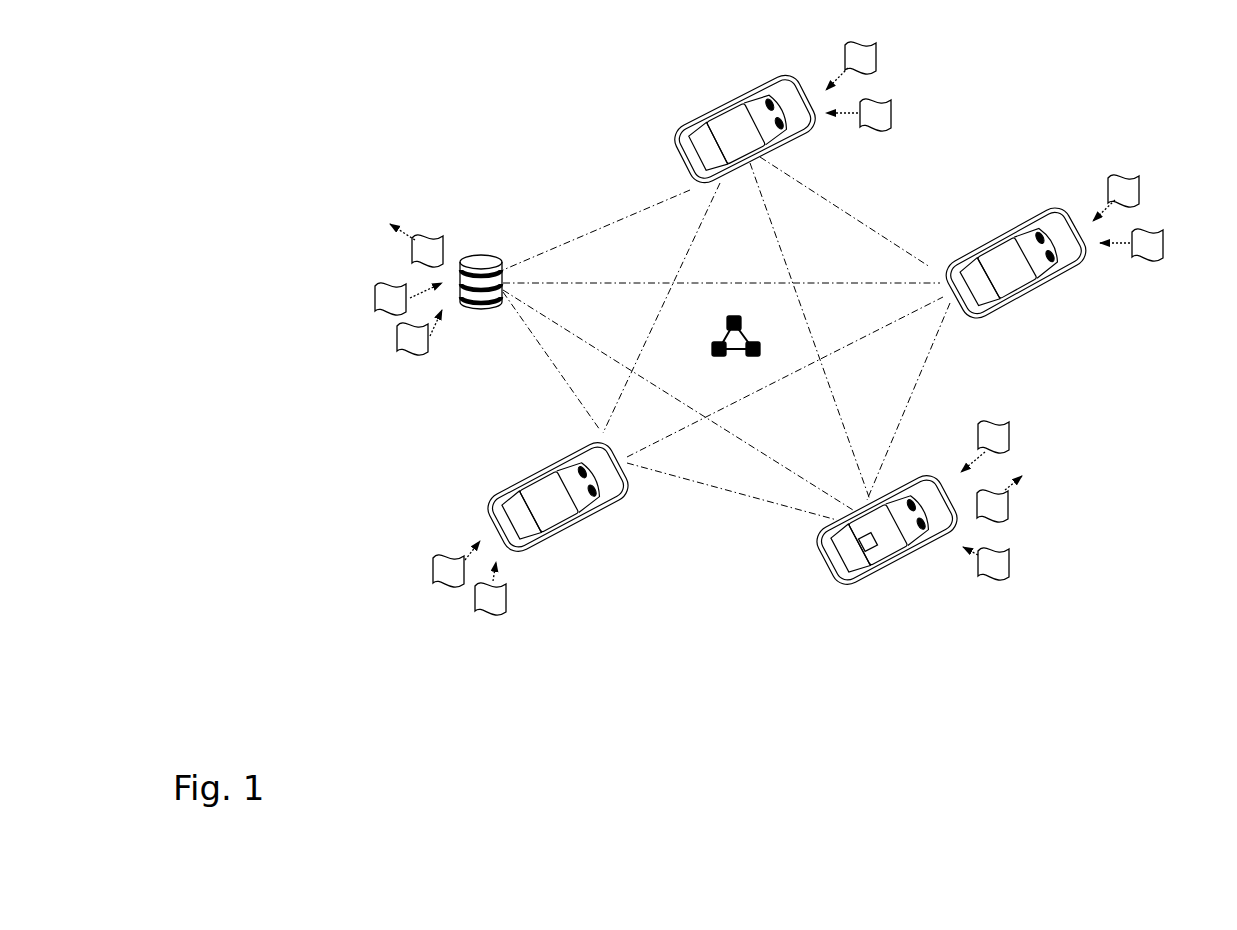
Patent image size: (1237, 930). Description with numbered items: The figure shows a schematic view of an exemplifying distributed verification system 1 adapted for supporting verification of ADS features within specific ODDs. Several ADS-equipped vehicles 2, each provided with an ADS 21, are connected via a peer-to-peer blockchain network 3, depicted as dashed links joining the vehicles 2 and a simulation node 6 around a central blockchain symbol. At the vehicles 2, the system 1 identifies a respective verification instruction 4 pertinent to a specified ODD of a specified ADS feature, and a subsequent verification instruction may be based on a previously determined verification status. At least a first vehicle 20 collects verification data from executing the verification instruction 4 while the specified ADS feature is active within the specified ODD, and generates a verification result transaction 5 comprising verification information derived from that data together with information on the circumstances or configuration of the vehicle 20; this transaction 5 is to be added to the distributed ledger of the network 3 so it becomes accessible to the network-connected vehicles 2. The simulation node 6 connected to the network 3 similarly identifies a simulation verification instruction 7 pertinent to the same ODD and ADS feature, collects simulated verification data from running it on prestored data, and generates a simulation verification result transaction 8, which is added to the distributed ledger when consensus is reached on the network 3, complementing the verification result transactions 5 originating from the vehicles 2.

The distributed verification system 1 is at (768, 420).
The ADS-equipped vehicle 2 is at (666, 106).
The peer-to-peer blockchain network 3 is at (589, 327).
The verification instruction 4 is at (1024, 405).
The verification result transaction 5 is at (896, 55).
The simulation node 6 is at (484, 235).
The simulation verification instruction 7 is at (347, 314).
The simulation verification result transaction 8 is at (907, 107).
The first vehicle 20 is at (848, 560).
The ADS 21 is at (871, 550).